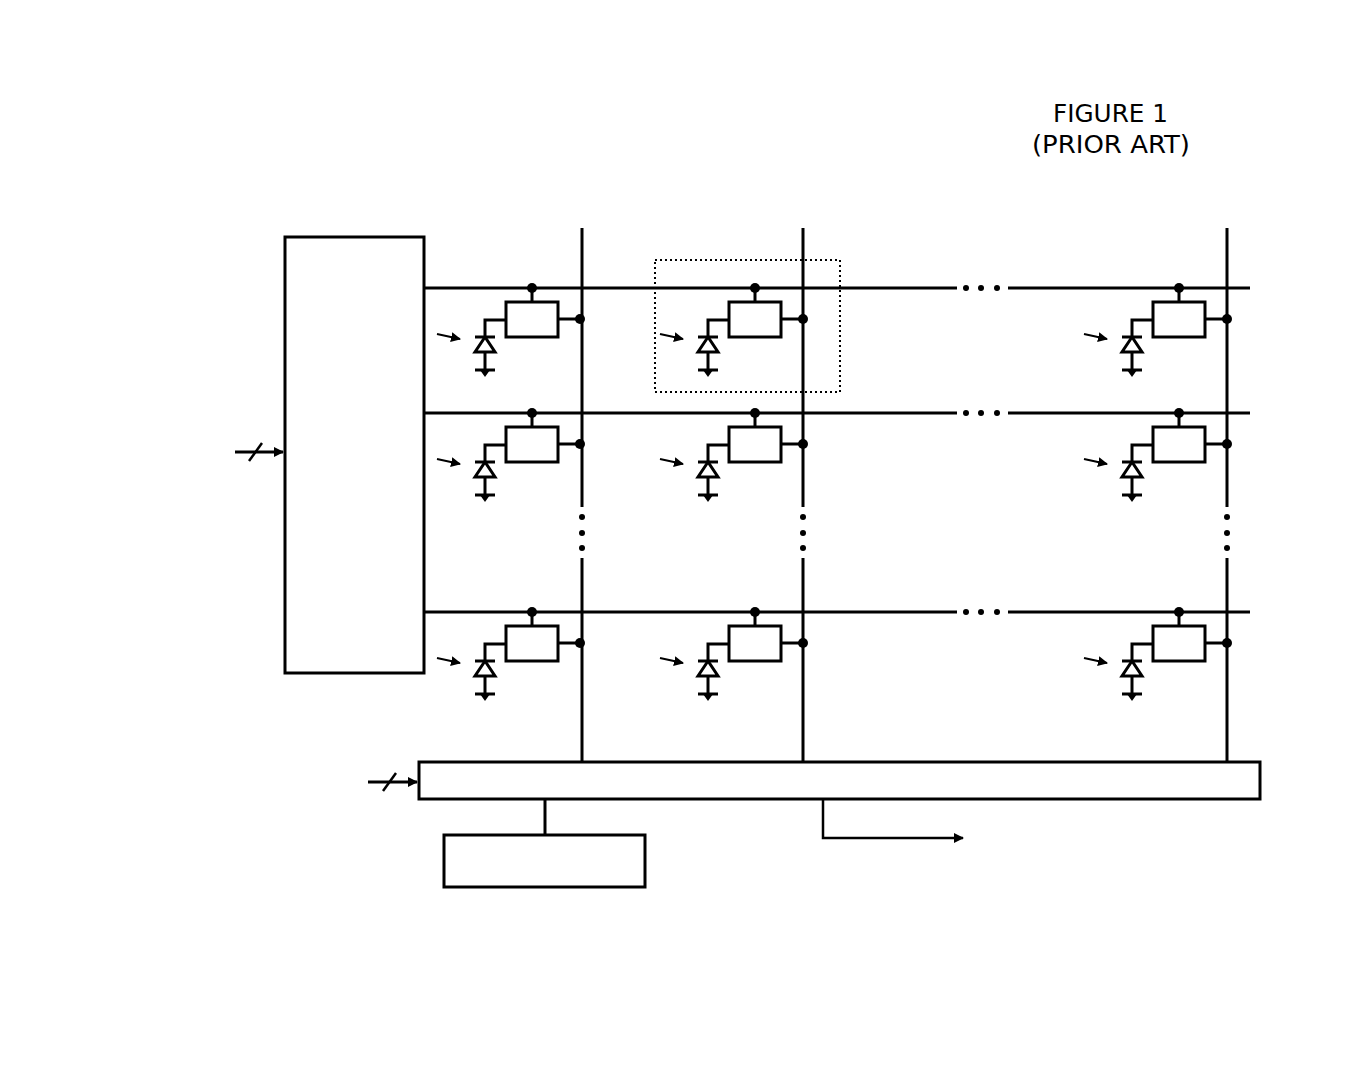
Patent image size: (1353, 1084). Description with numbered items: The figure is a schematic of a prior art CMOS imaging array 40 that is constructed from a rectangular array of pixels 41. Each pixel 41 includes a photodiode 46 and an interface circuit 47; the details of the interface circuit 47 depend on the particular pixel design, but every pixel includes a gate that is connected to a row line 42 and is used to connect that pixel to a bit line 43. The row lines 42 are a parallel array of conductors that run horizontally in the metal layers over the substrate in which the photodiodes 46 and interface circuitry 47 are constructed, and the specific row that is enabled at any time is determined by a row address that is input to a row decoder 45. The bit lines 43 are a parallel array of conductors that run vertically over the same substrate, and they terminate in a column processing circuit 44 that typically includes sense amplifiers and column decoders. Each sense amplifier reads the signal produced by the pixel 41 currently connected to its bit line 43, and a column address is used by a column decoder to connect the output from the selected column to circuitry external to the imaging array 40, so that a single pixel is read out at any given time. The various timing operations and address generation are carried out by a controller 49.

The imaging array 40 is at (212, 228).
The pixel 41 is at (714, 261).
The row line 42 is at (886, 286).
The bit line 43 is at (583, 590).
The column processing circuit 44 is at (920, 760).
The row decoder 45 is at (366, 236).
The photodiode 46 is at (490, 345).
The interface circuit 47 is at (518, 306).
The controller 49 is at (648, 862).